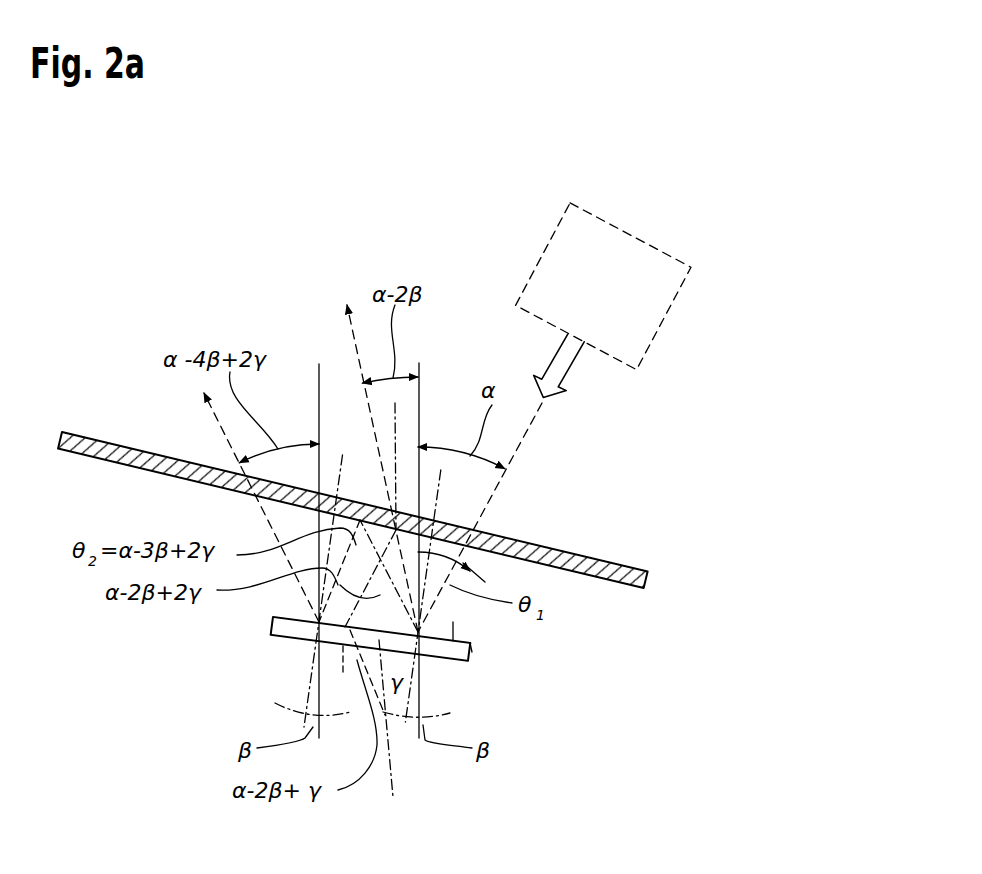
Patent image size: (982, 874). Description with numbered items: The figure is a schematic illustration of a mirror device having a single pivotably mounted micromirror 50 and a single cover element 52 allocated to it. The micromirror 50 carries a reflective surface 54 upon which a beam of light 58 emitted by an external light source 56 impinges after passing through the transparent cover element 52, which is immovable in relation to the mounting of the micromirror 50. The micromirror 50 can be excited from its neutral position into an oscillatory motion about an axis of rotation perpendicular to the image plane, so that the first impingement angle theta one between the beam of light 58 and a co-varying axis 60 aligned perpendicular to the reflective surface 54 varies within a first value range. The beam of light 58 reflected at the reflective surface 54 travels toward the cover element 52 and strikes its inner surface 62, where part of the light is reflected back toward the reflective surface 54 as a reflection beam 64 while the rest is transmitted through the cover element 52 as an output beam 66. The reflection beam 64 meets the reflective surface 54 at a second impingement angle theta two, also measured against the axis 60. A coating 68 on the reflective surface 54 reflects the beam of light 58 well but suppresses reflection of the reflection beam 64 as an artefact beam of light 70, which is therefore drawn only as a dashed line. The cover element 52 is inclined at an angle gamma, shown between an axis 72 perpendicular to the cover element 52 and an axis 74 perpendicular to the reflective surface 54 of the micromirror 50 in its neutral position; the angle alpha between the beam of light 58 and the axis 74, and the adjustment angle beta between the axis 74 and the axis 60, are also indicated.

The micromirror 50 is at (298, 629).
The cover element 52 is at (650, 582).
The reflective surface 54 is at (472, 644).
The external light source 56 is at (666, 320).
The beam of light 58 is at (562, 368).
The axis 60 is at (312, 674).
The inner surface 62 is at (104, 458).
The reflection beam 64 is at (341, 677).
The output beam 66 is at (358, 358).
The coating 68 is at (453, 640).
The artefact beam of light 70 is at (262, 518).
The axis 72 is at (395, 736).
The axis 74 is at (319, 442).